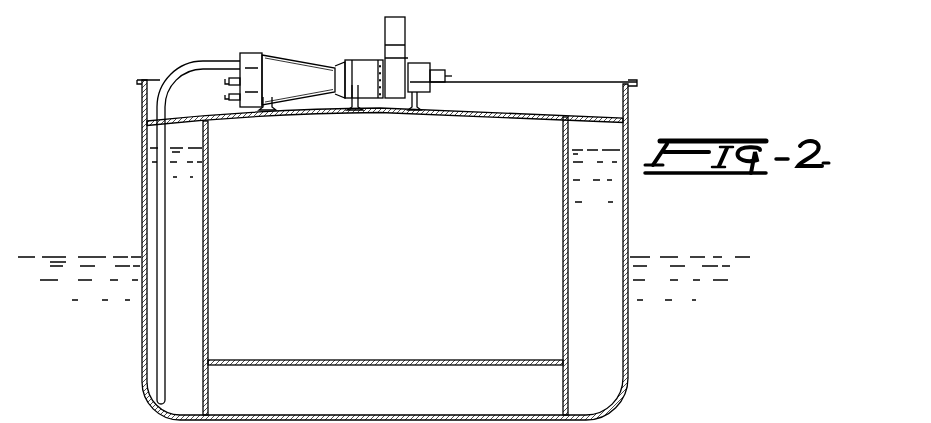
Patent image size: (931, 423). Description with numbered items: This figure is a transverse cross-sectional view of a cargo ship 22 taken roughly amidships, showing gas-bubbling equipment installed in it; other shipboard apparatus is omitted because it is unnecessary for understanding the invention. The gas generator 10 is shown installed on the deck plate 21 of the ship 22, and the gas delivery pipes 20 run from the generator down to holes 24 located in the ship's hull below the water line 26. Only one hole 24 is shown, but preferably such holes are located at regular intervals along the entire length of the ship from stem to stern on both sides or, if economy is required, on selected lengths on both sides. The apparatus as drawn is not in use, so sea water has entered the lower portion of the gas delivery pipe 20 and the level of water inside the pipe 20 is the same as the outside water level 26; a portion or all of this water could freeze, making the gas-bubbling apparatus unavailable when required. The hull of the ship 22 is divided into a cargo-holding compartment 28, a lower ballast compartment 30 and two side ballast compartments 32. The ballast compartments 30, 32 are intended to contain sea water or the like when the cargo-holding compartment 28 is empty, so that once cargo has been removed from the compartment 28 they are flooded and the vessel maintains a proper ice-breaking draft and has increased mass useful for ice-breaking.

The gas generator 10 is at (315, 70).
The gas delivery pipe 20 is at (222, 62).
The deck plate 21 is at (523, 109).
The ship 22 is at (628, 219).
The hole 24 is at (167, 409).
The water line 26 is at (93, 258).
The cargo-holding compartment 28 is at (400, 259).
The lower ballast compartment 30 is at (399, 399).
The side ballast compartment 32 is at (192, 281).